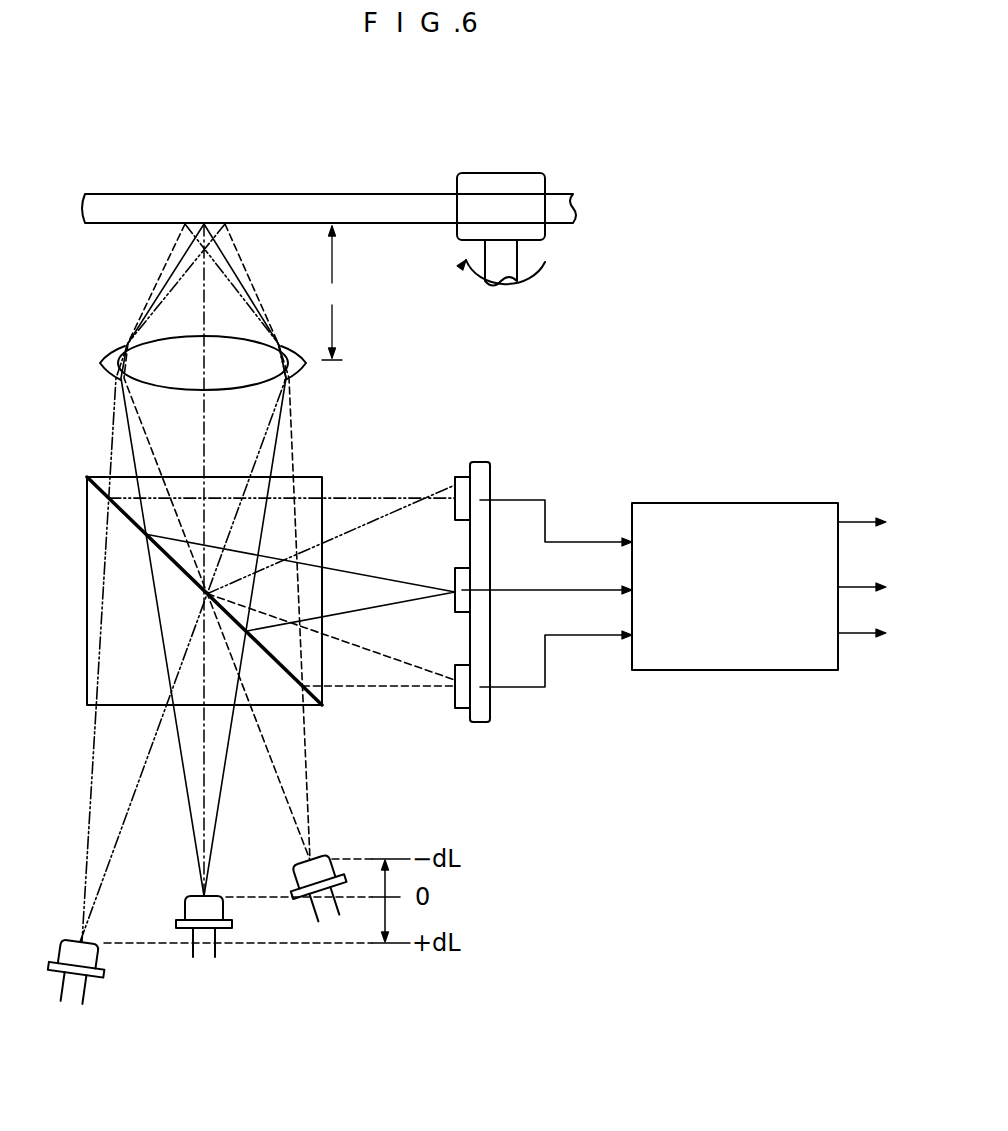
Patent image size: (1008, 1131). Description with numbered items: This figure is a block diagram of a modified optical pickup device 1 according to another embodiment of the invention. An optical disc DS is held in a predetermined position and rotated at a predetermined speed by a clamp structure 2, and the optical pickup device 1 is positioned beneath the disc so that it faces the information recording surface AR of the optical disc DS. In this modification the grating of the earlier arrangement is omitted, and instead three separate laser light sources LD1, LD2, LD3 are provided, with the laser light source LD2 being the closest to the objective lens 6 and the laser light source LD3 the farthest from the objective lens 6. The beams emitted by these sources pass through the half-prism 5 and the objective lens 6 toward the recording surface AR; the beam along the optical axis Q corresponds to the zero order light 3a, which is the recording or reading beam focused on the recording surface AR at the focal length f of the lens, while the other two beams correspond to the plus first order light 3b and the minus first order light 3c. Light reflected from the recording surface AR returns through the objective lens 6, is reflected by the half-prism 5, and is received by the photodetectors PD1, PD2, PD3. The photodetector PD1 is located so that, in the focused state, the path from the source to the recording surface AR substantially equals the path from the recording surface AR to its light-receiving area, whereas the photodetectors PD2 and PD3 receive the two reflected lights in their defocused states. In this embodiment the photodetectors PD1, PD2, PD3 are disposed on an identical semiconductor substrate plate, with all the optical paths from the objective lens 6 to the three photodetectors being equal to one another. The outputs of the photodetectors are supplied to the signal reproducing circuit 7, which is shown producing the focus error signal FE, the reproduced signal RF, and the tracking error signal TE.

The optical pickup device 1 is at (411, 396).
The clamp structure 2 is at (538, 150).
The zero order laser light 3a is at (125, 420).
The plus first order light 3b is at (111, 443).
The minus first order light 3c is at (269, 432).
The half-prism 5 is at (87, 596).
The objective lens 6 is at (115, 356).
The signal reproducing circuit 7 is at (748, 503).
The optical axis Q is at (206, 404).
The optical disc DS is at (341, 194).
The information recording surface AR is at (108, 225).
The focal length f is at (332, 293).
The photodetector PD1 is at (464, 612).
The photodetector PD2 is at (464, 712).
The photodetector PD3 is at (465, 477).
The laser light source LD1 is at (187, 913).
The laser light source LD2 is at (303, 875).
The laser light source LD3 is at (97, 957).
The focus error signal FE is at (878, 522).
The RF signal RF is at (879, 587).
The tracking error signal TE is at (879, 633).